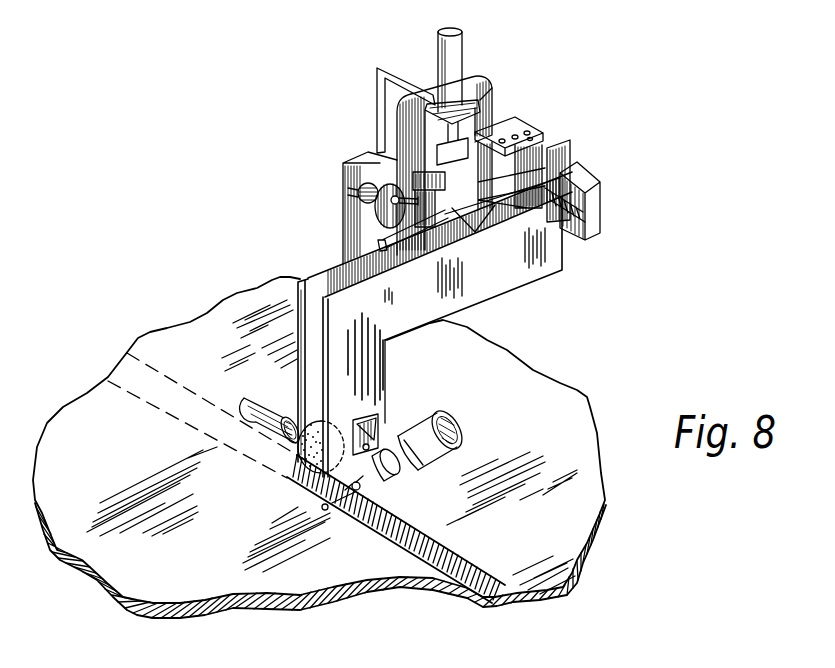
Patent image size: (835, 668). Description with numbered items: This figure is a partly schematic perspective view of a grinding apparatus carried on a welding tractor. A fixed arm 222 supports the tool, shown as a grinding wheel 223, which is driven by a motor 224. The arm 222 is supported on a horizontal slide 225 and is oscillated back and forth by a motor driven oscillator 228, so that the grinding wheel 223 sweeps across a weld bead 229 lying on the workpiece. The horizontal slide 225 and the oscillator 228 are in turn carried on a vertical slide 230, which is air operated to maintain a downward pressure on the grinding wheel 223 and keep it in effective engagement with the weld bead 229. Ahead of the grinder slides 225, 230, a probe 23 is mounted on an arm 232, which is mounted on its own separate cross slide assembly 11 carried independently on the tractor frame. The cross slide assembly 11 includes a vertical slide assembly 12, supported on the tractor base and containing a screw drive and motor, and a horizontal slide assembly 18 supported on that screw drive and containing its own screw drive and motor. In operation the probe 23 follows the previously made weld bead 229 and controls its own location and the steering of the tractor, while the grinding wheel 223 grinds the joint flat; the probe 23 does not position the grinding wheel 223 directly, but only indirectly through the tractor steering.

The cross slide assembly 11 is at (552, 148).
The vertical slide assembly 12 is at (522, 125).
The horizontal slide assembly 18 is at (593, 177).
The probe 23 is at (377, 488).
The fixed arm 222 is at (295, 300).
The grinding wheel 223 is at (300, 462).
The motor 224 is at (277, 390).
The horizontal slide 225 is at (376, 213).
The motor driven oscillator 228 is at (358, 191).
The weld bead 229 is at (463, 557).
The vertical slide 230 is at (483, 88).
The arm 232 is at (547, 266).